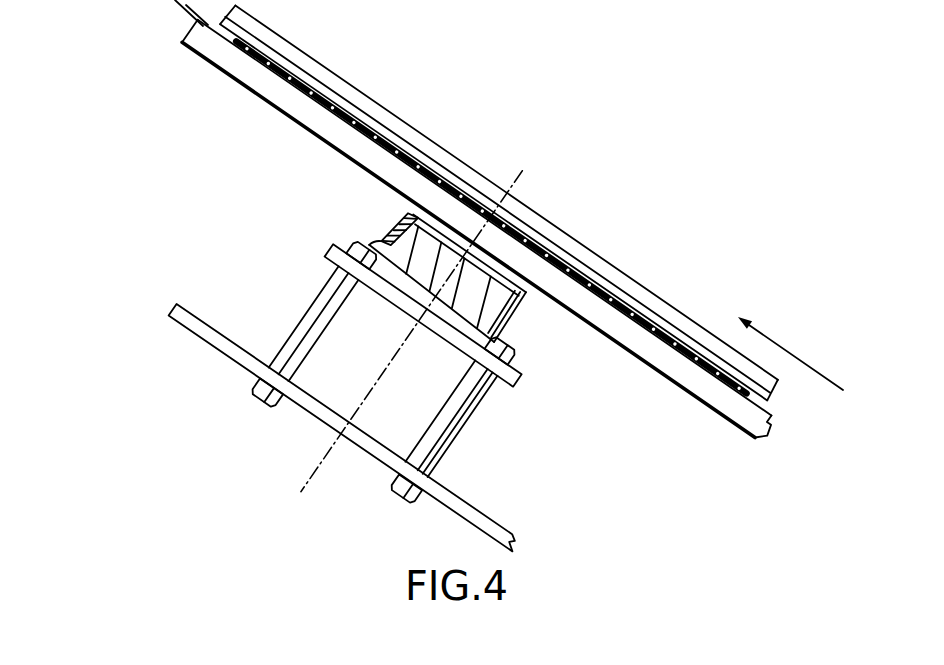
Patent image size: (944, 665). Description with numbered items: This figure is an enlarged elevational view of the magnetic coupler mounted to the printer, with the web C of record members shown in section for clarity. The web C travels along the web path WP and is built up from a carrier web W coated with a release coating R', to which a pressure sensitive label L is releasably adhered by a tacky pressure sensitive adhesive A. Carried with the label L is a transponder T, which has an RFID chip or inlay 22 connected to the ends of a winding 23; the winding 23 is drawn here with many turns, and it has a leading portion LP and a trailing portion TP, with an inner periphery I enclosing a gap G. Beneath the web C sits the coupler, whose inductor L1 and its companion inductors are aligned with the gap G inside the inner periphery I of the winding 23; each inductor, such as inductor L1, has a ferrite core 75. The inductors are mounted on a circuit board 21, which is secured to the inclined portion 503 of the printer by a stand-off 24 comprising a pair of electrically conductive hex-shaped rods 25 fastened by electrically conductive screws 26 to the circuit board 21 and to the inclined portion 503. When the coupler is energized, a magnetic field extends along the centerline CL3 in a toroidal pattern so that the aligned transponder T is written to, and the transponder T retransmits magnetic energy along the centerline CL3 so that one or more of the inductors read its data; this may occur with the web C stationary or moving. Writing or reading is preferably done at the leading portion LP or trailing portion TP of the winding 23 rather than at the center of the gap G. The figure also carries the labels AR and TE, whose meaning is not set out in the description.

The circuit board 21 is at (312, 252).
The RFID chip or inlay 22 is at (522, 324).
The winding 23 is at (383, 140).
The stand-off 24 is at (477, 449).
The hex-shaped rods 25 is at (320, 345).
The screws 26 is at (358, 248).
The core 75 is at (500, 190).
The inclined portion 503 is at (514, 533).
The pressure sensitive label L is at (277, 45).
The leading portion LP is at (340, 78).
The carrier web W is at (333, 128).
The web path WP is at (88, 0).
The web C is at (204, 74).
The transponder T is at (432, 127).
The inner periphery I is at (450, 174).
The gap G is at (560, 220).
The trailing portion TP is at (693, 350).
The direction arrow AR is at (776, 342).
The trailing edge TE is at (773, 386).
The pressure sensitive adhesive A is at (772, 400).
The release coating R' is at (736, 467).
The inductor L1 is at (545, 290).
The centerline CL3 is at (312, 477).